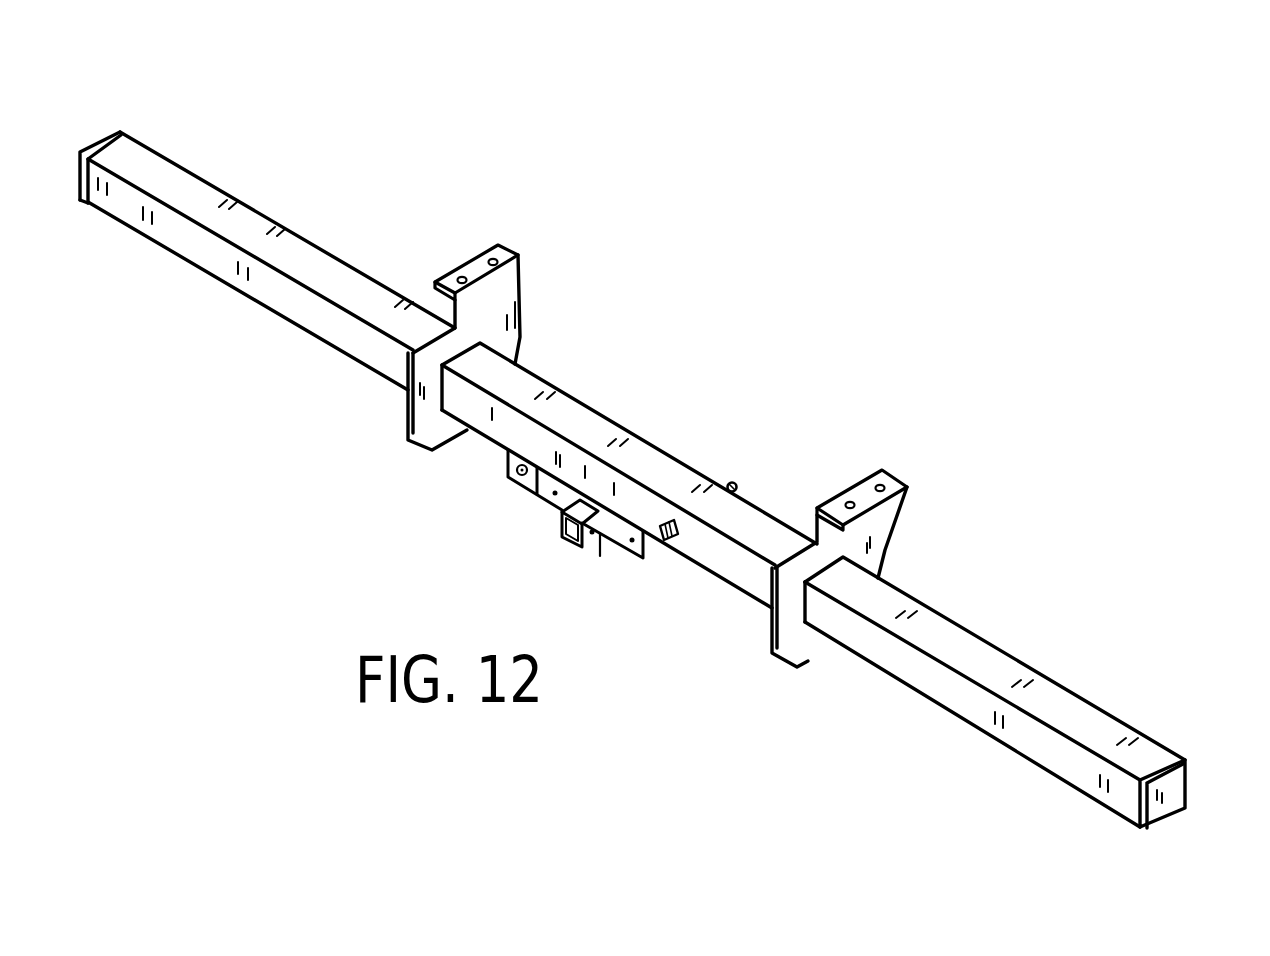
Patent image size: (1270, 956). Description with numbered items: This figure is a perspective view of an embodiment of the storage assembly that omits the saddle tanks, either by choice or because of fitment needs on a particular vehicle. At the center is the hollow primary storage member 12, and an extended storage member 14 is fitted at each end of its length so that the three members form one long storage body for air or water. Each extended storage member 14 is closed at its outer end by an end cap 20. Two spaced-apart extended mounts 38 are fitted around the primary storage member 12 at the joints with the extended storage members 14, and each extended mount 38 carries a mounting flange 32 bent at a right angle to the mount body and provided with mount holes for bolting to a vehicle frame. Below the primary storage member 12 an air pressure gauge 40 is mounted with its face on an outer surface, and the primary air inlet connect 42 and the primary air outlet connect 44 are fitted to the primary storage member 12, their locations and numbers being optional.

The primary storage member 12 is at (613, 423).
The extended storage member 14 is at (242, 296).
The end cap 20 is at (119, 131).
The mounting flange 32 is at (504, 250).
The extended mount 38 is at (521, 296).
The air pressure gauge 40 is at (510, 478).
The primary air inlet connect 42 is at (731, 484).
The primary air outlet connect 44 is at (667, 545).